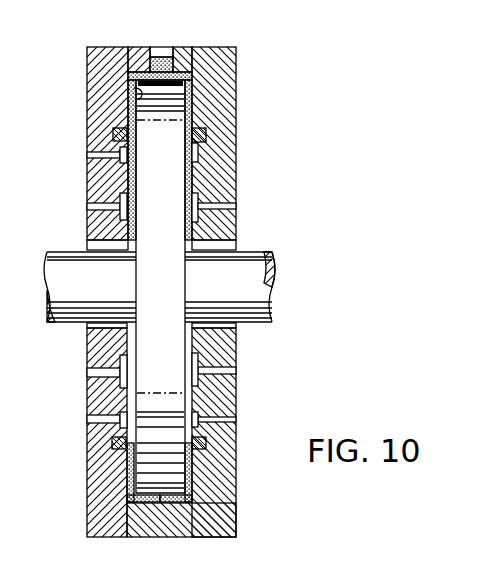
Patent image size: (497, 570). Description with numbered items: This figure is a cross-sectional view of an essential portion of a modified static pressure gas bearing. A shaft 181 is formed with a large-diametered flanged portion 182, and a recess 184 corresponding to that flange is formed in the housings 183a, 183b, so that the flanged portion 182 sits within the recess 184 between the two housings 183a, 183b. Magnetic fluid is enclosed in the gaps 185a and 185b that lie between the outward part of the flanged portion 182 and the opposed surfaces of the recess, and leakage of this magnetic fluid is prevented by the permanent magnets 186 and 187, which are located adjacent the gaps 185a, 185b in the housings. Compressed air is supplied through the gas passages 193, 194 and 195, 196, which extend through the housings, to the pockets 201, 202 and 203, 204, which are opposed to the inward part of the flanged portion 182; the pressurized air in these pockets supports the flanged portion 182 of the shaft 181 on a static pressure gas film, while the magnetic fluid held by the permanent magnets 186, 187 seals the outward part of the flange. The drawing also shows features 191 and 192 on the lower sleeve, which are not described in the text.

The shaft 181 is at (248, 262).
The large-diametered flanged portion 182 is at (173, 110).
The housing 183a is at (100, 70).
The housing 183b is at (210, 58).
The recess 184 is at (150, 71).
The gap 185a is at (128, 477).
The gap 185b is at (192, 480).
The permanent magnet 186 is at (113, 131).
The permanent magnet 187 is at (206, 135).
The lower passage 191 is at (130, 397).
The lower passage 192 is at (190, 397).
The gas passage 193 is at (87, 373).
The gas passage 194 is at (236, 371).
The gas passage 195 is at (90, 158).
The gas passage 196 is at (260, 197).
The pocket 201 is at (127, 368).
The pocket 202 is at (197, 363).
The pocket 203 is at (120, 210).
The pocket 204 is at (196, 193).